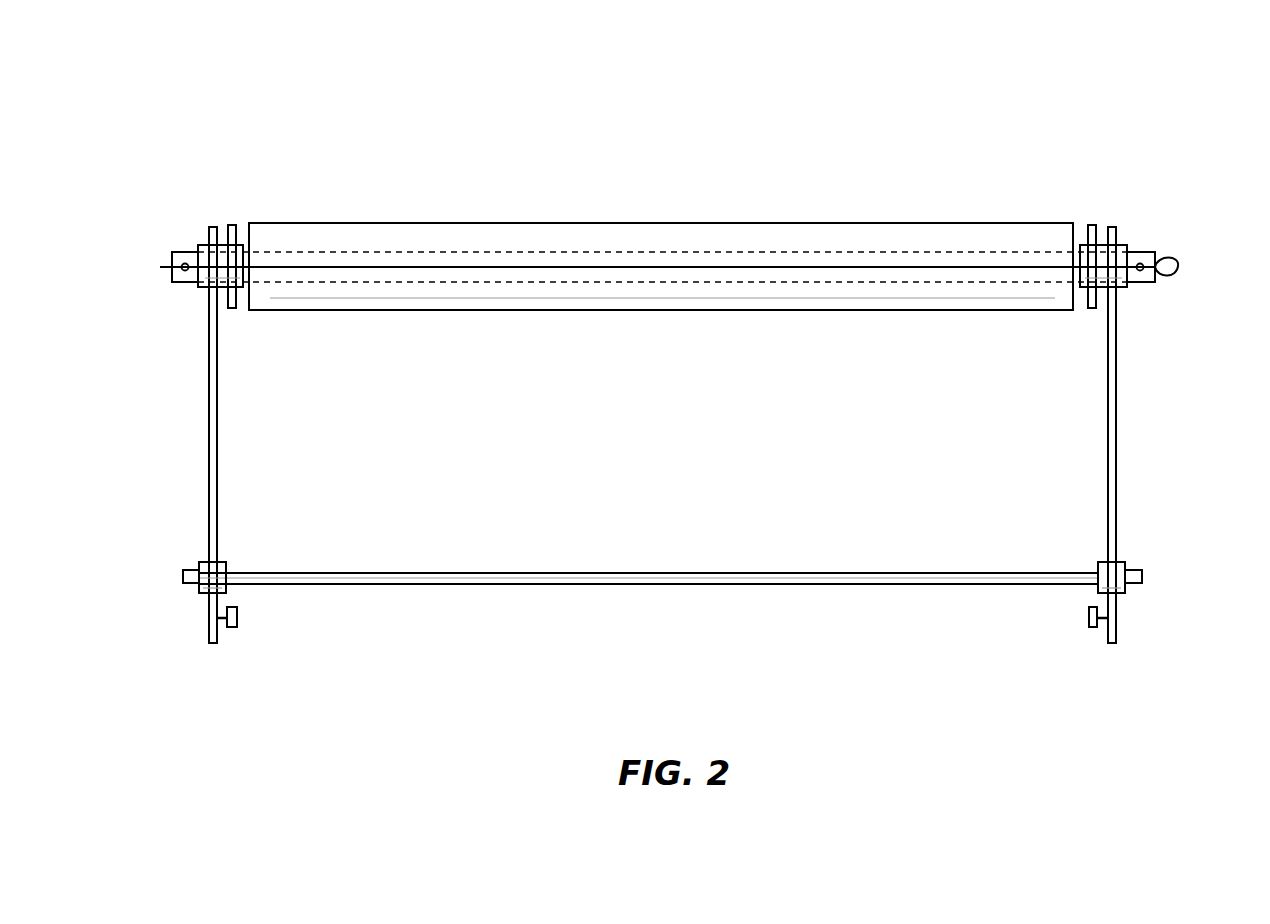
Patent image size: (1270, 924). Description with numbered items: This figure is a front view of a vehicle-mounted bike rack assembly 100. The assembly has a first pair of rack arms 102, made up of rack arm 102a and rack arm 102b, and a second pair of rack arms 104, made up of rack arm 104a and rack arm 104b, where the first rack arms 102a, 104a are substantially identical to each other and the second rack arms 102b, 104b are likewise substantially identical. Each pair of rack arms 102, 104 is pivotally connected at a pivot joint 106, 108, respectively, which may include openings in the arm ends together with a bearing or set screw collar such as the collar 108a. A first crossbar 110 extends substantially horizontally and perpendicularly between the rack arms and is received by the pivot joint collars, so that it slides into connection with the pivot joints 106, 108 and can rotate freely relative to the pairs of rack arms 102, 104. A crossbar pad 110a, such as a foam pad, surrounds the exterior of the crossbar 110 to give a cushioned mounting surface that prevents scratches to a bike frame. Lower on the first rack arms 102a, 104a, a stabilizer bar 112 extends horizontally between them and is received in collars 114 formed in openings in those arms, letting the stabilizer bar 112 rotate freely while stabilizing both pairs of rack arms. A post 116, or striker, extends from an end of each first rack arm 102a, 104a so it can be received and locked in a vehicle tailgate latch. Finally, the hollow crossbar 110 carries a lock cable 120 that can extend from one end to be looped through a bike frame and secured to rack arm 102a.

The vehicle-mounted bike rack assembly 100 is at (983, 140).
The first pair of rack arms 102 is at (250, 393).
The first rack arm 102a is at (209, 465).
The second rack arm 102b is at (202, 217).
The second pair of rack arms 104 is at (1070, 392).
The first rack arm 104a is at (1117, 452).
The second rack arm 104b is at (1108, 207).
The pivot joint 106 is at (200, 288).
The pivot joint 108 is at (1103, 282).
The collar 108a is at (1128, 247).
The first crossbar 110 is at (518, 253).
The crossbar pad 110a is at (672, 232).
The stabilizer bar 112 is at (632, 584).
The collars 114 is at (223, 563).
The post 116 is at (237, 618).
The lock cable 120 is at (1172, 270).